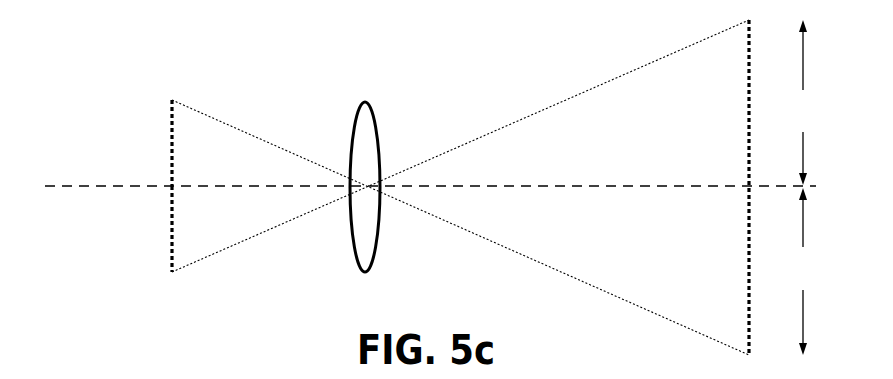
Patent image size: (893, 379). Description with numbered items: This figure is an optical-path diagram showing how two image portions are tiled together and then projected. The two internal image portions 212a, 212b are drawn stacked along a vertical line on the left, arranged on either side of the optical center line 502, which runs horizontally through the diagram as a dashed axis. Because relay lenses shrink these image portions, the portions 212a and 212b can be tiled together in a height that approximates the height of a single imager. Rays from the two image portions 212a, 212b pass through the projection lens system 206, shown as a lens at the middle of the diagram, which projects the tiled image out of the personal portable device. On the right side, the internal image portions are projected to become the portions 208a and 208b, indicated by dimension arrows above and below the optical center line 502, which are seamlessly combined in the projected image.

The optical center line 502 is at (147, 180).
The projection lens system 206 is at (385, 116).
The image portion 212a is at (173, 92).
The image portion 212b is at (173, 280).
The projected image portion 208a is at (803, 271).
The projected image portion 208b is at (804, 102).